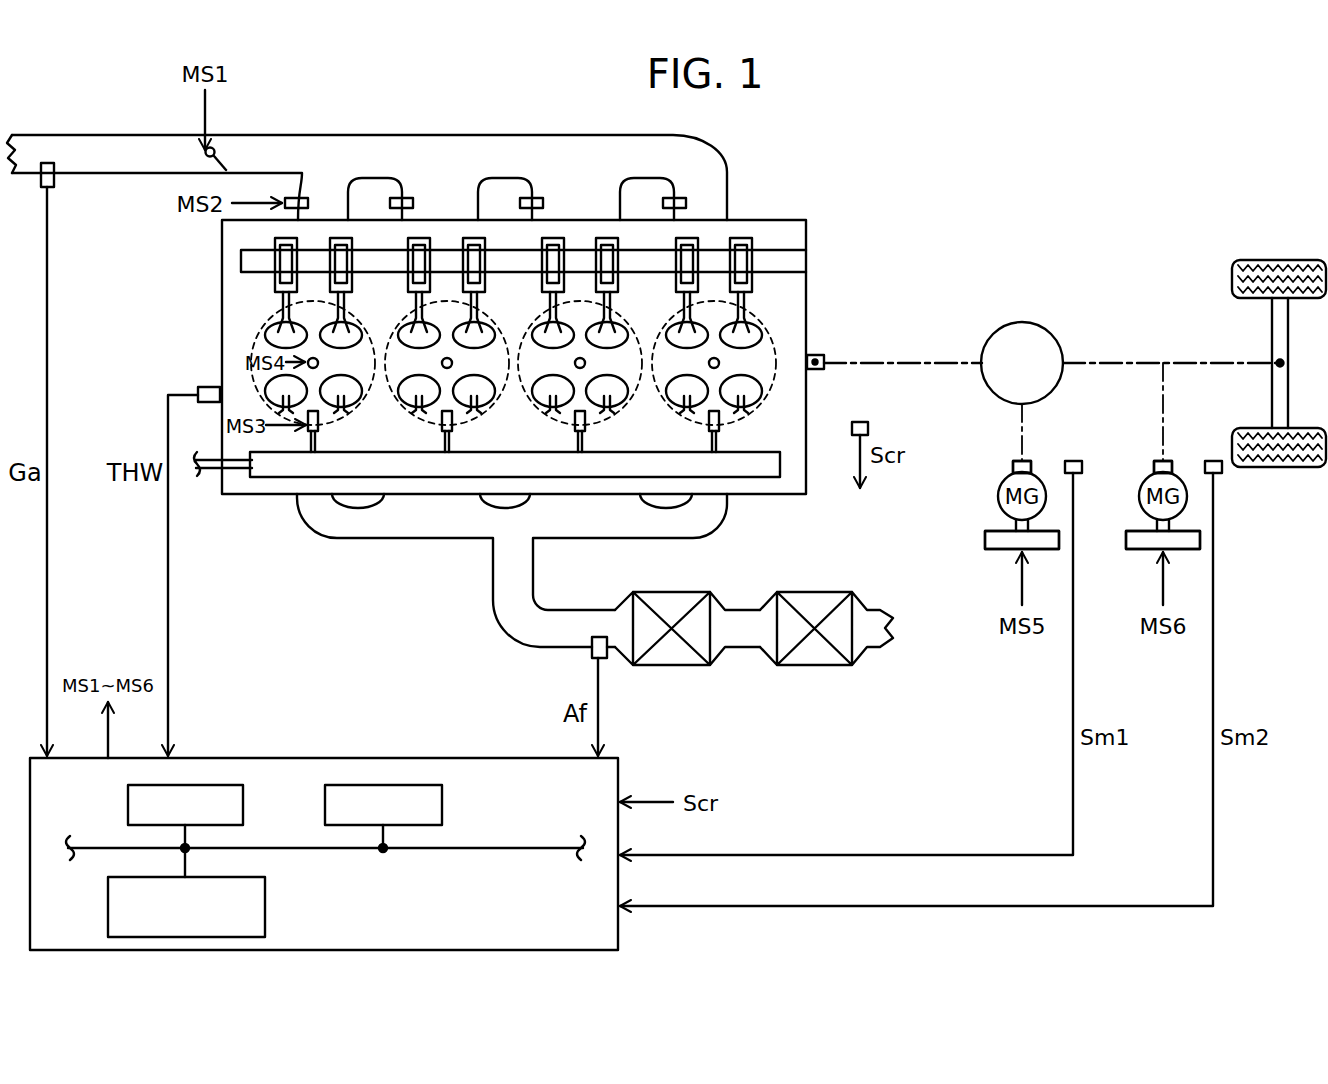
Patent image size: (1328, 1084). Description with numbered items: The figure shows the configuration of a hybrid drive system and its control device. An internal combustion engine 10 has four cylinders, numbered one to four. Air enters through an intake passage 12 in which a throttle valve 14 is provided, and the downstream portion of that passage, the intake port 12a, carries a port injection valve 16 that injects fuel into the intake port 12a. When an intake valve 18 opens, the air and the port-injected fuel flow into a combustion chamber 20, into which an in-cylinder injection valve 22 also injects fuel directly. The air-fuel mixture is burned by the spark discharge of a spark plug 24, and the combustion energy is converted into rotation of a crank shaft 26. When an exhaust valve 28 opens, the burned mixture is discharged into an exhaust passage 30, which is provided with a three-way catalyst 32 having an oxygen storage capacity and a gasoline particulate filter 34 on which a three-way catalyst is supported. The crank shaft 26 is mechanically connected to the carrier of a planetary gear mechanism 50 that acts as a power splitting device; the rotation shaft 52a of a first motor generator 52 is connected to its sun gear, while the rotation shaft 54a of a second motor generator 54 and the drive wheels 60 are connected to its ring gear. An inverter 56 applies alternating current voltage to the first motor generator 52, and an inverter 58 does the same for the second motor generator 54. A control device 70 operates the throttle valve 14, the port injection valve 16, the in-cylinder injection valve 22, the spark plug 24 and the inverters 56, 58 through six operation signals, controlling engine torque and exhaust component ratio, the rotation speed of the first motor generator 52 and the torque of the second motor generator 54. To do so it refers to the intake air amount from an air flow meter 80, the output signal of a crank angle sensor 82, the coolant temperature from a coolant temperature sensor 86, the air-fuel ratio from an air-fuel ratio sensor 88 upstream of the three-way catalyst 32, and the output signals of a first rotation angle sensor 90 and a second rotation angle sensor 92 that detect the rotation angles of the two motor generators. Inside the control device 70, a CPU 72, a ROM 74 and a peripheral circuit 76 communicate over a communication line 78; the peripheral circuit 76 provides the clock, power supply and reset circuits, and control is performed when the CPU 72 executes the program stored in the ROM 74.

The internal combustion engine 10 is at (814, 192).
The intake passage 12 is at (55, 134).
The intake port 12a is at (690, 150).
The throttle valve 14 is at (214, 151).
The port injection valve 16 is at (668, 198).
The intake valve 18 is at (274, 306).
The combustion chamber 20 is at (252, 343).
The in-cylinder injection valve 22 is at (320, 424).
The spark plug 24 is at (364, 346).
The crank shaft 26 is at (816, 370).
The exhaust valve 28 is at (350, 404).
The exhaust passage 30 is at (590, 540).
The three-way catalyst 32 is at (672, 592).
The gasoline particulate filter 34 is at (812, 592).
The planetary gear mechanism 50 is at (1038, 326).
The first motor generator 52 is at (998, 496).
The rotation shaft of first motor generator 52a is at (1012, 467).
The second motor generator 54 is at (1139, 496).
The rotation shaft of second motor generator 54a is at (1153, 467).
The inverter 56 is at (984, 541).
The inverter 58 is at (1125, 541).
The drive wheels 60 is at (1282, 468).
The control device 70 is at (292, 757).
The central processing unit 72 is at (245, 805).
The read only memory 74 is at (443, 805).
The peripheral circuit 76 is at (265, 905).
The communication line 78 is at (548, 845).
The air flow meter 80 is at (44, 190).
The crank angle sensor 82 is at (870, 425).
The coolant temperature sensor 86 is at (213, 387).
The air-fuel ratio sensor 88 is at (607, 662).
The first rotation angle sensor 90 is at (1073, 461).
The second rotation angle sensor 92 is at (1213, 461).